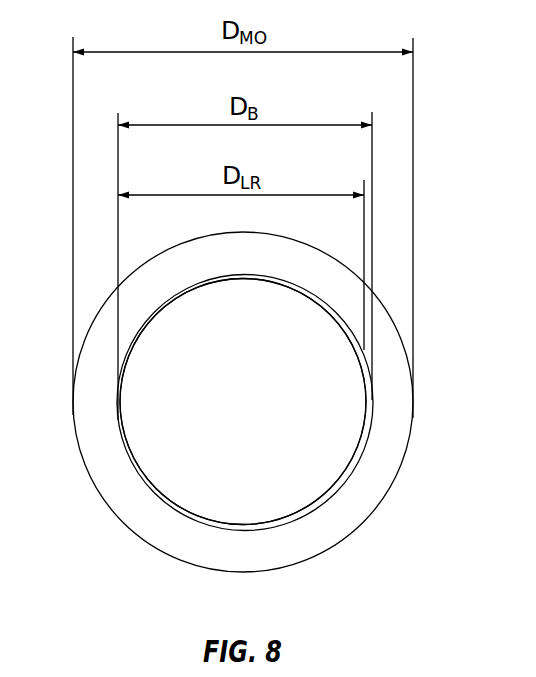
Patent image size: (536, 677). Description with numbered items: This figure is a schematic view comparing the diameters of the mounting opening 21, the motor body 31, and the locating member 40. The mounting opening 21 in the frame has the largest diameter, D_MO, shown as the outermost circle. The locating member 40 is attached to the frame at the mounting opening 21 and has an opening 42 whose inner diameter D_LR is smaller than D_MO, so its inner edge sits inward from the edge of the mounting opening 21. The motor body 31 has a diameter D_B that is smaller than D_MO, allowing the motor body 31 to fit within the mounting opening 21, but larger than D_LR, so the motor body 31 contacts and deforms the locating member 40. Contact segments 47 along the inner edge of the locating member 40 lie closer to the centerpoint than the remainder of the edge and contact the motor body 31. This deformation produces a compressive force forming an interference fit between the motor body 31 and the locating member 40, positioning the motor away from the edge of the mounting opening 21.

The mounting opening 21 is at (323, 553).
The motor body 31 is at (350, 475).
The locating member 40 is at (368, 442).
The opening 42 is at (197, 470).
The contact segments 47 is at (123, 447).